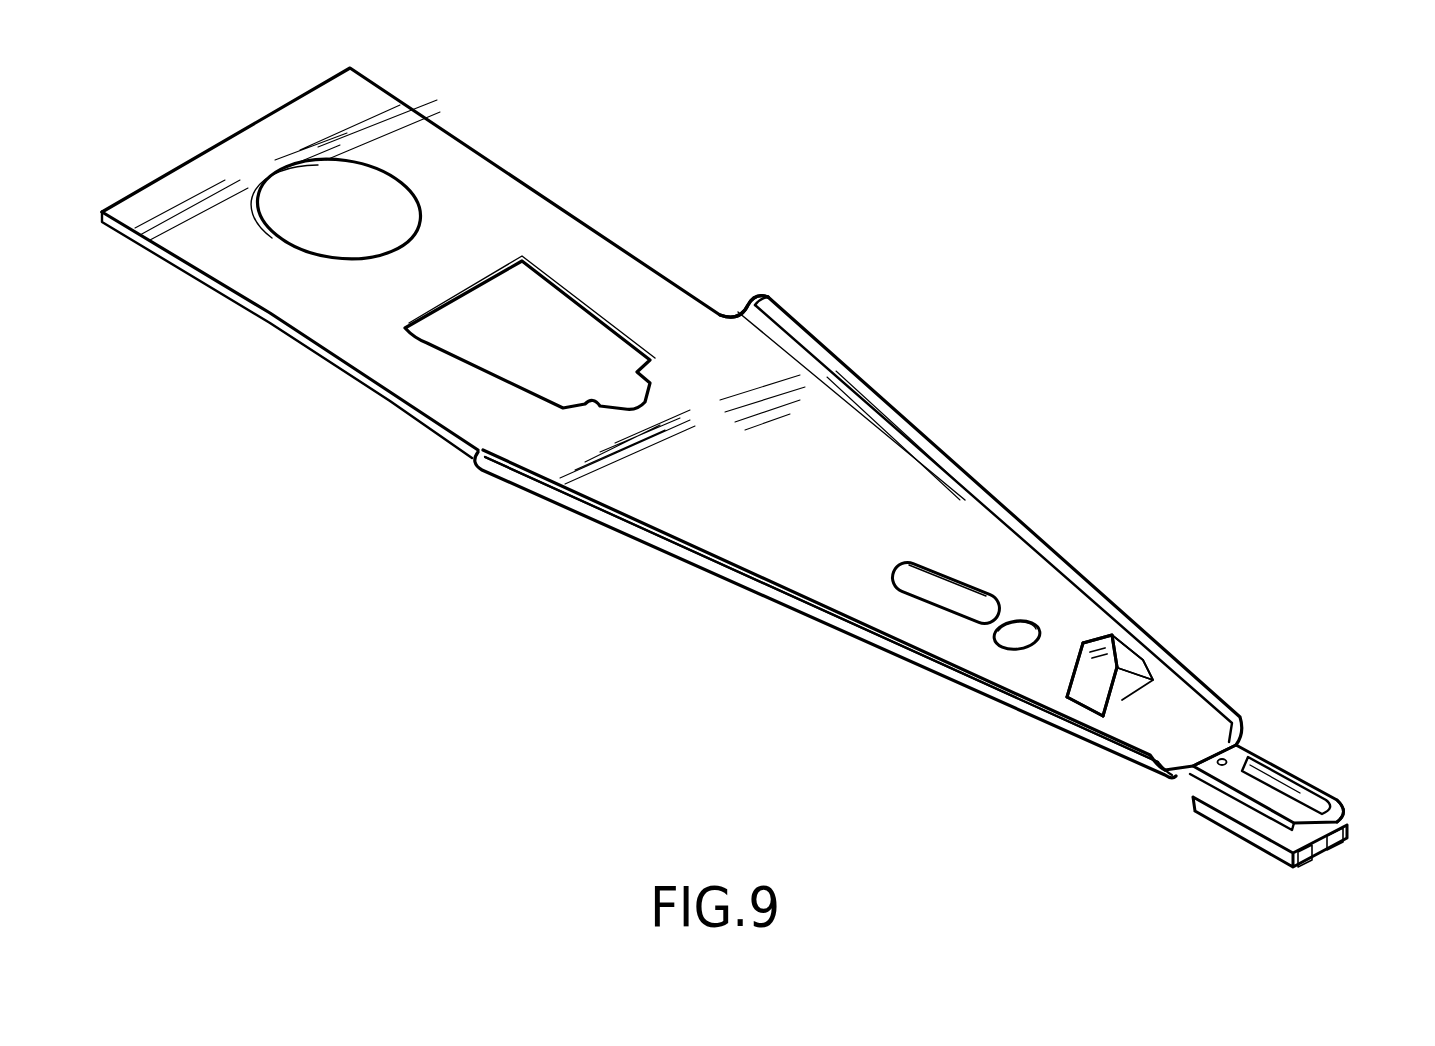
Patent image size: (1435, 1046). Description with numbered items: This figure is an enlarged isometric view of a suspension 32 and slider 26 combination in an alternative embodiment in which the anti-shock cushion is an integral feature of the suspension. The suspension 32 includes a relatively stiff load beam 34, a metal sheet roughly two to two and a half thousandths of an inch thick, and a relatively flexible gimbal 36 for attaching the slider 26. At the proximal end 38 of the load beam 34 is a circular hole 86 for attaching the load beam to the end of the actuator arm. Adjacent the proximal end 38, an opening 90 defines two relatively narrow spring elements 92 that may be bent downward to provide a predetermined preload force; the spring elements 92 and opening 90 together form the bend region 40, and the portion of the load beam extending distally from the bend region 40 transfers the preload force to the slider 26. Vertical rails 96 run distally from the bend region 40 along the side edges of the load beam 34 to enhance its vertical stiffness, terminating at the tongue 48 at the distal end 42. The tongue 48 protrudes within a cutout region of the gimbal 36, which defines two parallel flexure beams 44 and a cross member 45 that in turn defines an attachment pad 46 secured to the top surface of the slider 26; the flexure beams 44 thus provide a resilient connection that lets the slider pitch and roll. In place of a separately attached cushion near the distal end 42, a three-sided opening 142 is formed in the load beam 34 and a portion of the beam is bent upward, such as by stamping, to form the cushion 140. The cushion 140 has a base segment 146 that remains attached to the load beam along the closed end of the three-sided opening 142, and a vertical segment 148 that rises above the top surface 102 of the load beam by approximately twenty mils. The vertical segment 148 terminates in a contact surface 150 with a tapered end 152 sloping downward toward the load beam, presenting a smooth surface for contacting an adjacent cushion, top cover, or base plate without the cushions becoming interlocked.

The slider 26 is at (1240, 835).
The suspension 32 is at (1006, 314).
The load beam 34 is at (747, 543).
The gimbal 36 is at (1250, 760).
The proximal end 38 is at (448, 157).
The bend region 40 is at (676, 312).
The distal end 42 is at (1185, 738).
The flexure beams 44 is at (1310, 785).
The cross member 45 is at (1347, 812).
The attachment pad 46 is at (1313, 827).
The tongue 48 is at (1260, 790).
The circular hole 86 is at (284, 232).
The opening 90 is at (448, 343).
The spring elements 92 is at (633, 273).
The vertical rails 96 is at (598, 522).
The top surface 102 is at (827, 497).
The cushion 140 is at (1104, 630).
The three-sided opening 142 is at (1123, 687).
The base segment 146 is at (1087, 698).
The vertical segment 148 is at (1090, 677).
The contact surface 150 is at (1108, 645).
The tapered end 152 is at (1148, 662).